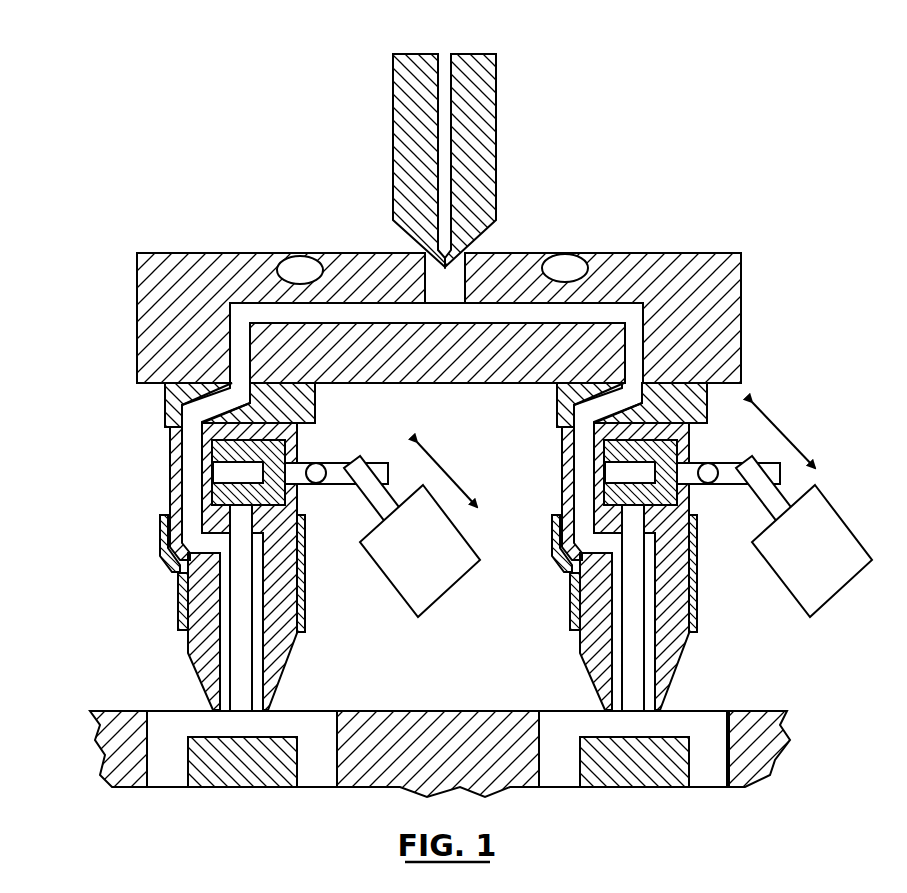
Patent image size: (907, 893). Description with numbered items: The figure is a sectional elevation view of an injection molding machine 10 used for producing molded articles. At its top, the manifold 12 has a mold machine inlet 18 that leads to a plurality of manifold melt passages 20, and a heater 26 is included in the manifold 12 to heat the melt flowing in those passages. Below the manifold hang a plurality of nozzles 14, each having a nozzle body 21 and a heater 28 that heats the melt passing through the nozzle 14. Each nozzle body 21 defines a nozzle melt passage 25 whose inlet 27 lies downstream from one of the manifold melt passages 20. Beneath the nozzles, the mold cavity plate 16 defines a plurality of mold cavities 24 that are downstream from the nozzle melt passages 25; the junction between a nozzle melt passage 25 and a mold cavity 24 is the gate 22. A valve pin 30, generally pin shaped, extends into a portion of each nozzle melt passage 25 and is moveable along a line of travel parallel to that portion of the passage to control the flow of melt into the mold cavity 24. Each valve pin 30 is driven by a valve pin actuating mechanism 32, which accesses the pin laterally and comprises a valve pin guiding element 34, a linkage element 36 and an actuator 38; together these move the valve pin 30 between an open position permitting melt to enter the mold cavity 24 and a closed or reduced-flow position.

The injection molding machine 10 is at (646, 198).
The manifold 12 is at (703, 258).
The nozzle 14 is at (202, 593).
The mold cavity plate 16 is at (440, 711).
The mold machine inlet 18 is at (458, 273).
The manifold melt passage 20 is at (238, 318).
The nozzle body 21 is at (188, 647).
The gate 22 is at (247, 745).
The mold cavity 24 is at (160, 711).
The nozzle melt passage 25 is at (197, 498).
The heater 26 is at (300, 258).
The inlet 27 is at (237, 365).
The heater 28 is at (305, 628).
The valve pin 30 is at (243, 638).
The valve pin actuating mechanism 32 is at (295, 450).
The valve pin guiding element 34 is at (297, 495).
The linkage element 36 is at (335, 458).
The actuator 38 is at (383, 553).